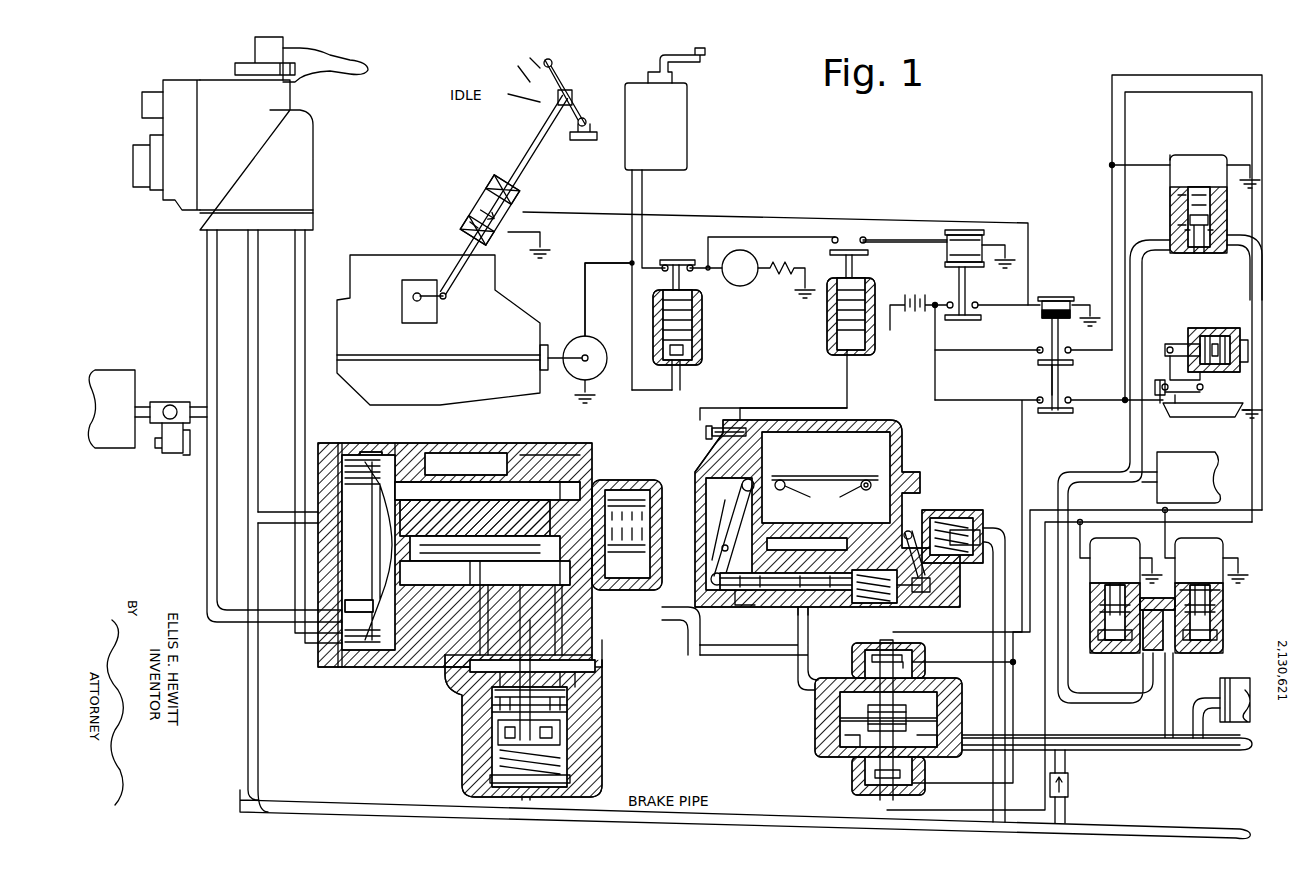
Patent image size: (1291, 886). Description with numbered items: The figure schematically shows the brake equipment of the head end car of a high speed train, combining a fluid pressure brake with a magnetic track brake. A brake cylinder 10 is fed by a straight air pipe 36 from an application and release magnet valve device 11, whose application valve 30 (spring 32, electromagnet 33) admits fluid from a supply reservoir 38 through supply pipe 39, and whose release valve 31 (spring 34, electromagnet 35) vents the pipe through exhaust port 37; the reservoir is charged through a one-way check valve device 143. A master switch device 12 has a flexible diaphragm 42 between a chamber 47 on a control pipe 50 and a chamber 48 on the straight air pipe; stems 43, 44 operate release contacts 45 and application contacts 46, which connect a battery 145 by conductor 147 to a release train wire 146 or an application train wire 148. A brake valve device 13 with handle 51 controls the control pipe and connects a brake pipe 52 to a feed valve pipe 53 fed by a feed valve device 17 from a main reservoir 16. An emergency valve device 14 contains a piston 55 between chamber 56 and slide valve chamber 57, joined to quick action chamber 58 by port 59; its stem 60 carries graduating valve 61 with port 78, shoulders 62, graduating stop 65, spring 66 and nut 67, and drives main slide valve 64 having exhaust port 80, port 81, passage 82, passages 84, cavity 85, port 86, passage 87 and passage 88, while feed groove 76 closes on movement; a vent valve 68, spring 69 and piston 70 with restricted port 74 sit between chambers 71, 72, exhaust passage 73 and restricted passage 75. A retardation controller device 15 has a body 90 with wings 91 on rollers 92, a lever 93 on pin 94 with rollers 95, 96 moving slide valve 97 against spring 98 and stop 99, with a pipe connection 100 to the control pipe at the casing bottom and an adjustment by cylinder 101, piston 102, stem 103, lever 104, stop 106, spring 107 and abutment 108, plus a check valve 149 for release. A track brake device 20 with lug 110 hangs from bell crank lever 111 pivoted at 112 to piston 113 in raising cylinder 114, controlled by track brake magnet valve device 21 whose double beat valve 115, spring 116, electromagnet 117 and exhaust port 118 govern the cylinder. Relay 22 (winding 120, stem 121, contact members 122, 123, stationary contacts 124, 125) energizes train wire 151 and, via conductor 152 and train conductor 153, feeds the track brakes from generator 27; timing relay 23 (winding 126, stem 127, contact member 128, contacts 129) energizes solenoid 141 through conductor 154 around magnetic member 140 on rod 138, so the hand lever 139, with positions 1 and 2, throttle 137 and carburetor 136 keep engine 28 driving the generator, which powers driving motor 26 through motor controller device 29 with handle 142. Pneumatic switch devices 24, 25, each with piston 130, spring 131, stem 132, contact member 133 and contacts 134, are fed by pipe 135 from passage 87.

The operating position 1 is at (519, 73).
The operating position 2 is at (536, 52).
The brake cylinder 10 is at (1244, 710).
The application and release magnet valve device 11 is at (1226, 634).
The master switch device 12 is at (815, 750).
The brake valve device 13 is at (318, 150).
The emergency valve device 14 is at (323, 443).
The retardation controller device 15 is at (912, 482).
The main reservoir 16 is at (132, 374).
The feed valve device 17 is at (158, 400).
The magnetic track brake device 20 is at (1230, 412).
The track brake magnet valve device 21 is at (1228, 216).
The application and release relay 22 is at (1040, 312).
The timing relay 23 is at (952, 232).
The pneumatic switch device 24 is at (700, 350).
The pneumatic switch device 25 is at (830, 333).
The driving motor 26 is at (747, 256).
The generator 27 is at (594, 338).
The internal combustion engine 28 is at (512, 307).
The motor controller device 29 is at (688, 122).
The application valve 30 is at (1098, 632).
The release valve 31 is at (1222, 652).
The spring 32 is at (1115, 631).
The application electromagnet 33 is at (1090, 566).
The spring 34 is at (1199, 631).
The release electromagnet 35 is at (1224, 562).
The straight air pipe 36 is at (1128, 740).
The exhaust port 37 is at (1222, 600).
The supply reservoir 38 is at (1218, 467).
The supply pipe 39 is at (1150, 280).
The flexible diaphragm 42 is at (905, 700).
The stem 43 is at (852, 672).
The stem 44 is at (925, 758).
The release contacts 45 is at (905, 656).
The application contacts 46 is at (870, 782).
The chamber 47 is at (945, 700).
The chamber 48 is at (945, 720).
The control pipe 50 is at (295, 262).
The handle 51 is at (355, 64).
The brake pipe 52 is at (248, 262).
The feed valve pipe 53 is at (207, 262).
The piston 55 is at (372, 520).
The chamber 56 is at (340, 484).
The slide valve chamber 57 is at (550, 465).
The quick action chamber 58 is at (420, 455).
The port 59 is at (466, 464).
The stem 60 is at (487, 491).
The graduating valve 61 is at (539, 491).
The shoulders 62 is at (510, 544).
The main slide valve 64 is at (475, 518).
The graduating stop 65 is at (612, 490).
The spring 66 is at (636, 490).
The nut 67 is at (668, 621).
The vent valve 68 is at (560, 732).
The spring 69 is at (570, 756).
The piston 70 is at (590, 680).
The chamber 71 is at (636, 660).
The chamber 72 is at (600, 688).
The passage 73 is at (592, 706).
The restricted port 74 is at (532, 640).
The restricted passage 75 is at (445, 676).
The feed groove 76 is at (362, 452).
The port 78 is at (549, 491).
The exhaust port 80 is at (536, 602).
The port 81 is at (570, 620).
The passage 82 is at (596, 652).
The passages 84 is at (497, 620).
The cavity 85 is at (485, 582).
The port 86 is at (485, 531).
The passage 87 is at (355, 614).
The passage 88 is at (357, 599).
The body 90 is at (862, 440).
The flanges or wings 91 is at (825, 469).
The rollers 92 is at (823, 493).
The lever 93 is at (730, 534).
The pin or rod 94 is at (718, 530).
The roller 95 is at (728, 446).
The roller 96 is at (719, 608).
The slide valve 97 is at (738, 590).
The spring 98 is at (875, 603).
The stop 99 is at (861, 494).
The pipe connection 100 is at (808, 615).
The cylinder 101 is at (975, 516).
The piston 102 is at (938, 555).
The stem 103 is at (938, 518).
The lever 104 is at (900, 534).
The stop 106 is at (948, 587).
The spring 107 is at (958, 518).
The abutment 108 is at (916, 605).
The lug 110 is at (1226, 378).
The bell crank lever 111 is at (1168, 342).
The pivot 112 is at (1170, 398).
The piston 113 is at (1205, 330).
The raising cylinder 114 is at (1233, 330).
The double beat valve 115 is at (1175, 225).
The spring 116 is at (1196, 258).
The electromagnet 117 is at (1218, 160).
The exhaust port 118 is at (1175, 198).
The winding or solenoid 120 is at (1058, 299).
The stem 121 is at (1052, 363).
The contact member 122 is at (1073, 363).
The contact member 123 is at (1063, 413).
The stationary contacts 124 is at (1068, 349).
The stationary contacts 125 is at (1068, 399).
The winding 126 is at (976, 252).
The stem 127 is at (958, 269).
The contact member 128 is at (962, 320).
The stationary contacts 129 is at (972, 300).
The piston 130 is at (692, 366).
The spring 131 is at (700, 330).
The stem 132 is at (672, 278).
The contact member 133 is at (670, 259).
The stationary contacts 134 is at (688, 270).
The pipe 135 is at (745, 406).
The carburetor 136 is at (437, 322).
The throttle 137 is at (423, 280).
The rod or stem 138 is at (530, 148).
The hand lever 139 is at (560, 76).
The magnetic member 140 is at (512, 198).
The solenoid 141 is at (474, 197).
The handle 142 is at (658, 58).
The one-way check valve device 143 is at (1070, 788).
The battery 145 is at (912, 313).
The release train wire 146 is at (1238, 509).
The conductor 147 is at (936, 372).
The application train wire 148 is at (1232, 523).
The check valve 149 is at (717, 651).
The train wire 151 is at (1150, 80).
The conductor 152 is at (655, 382).
The train conductor 153 is at (1160, 93).
The conductor 154 is at (690, 216).